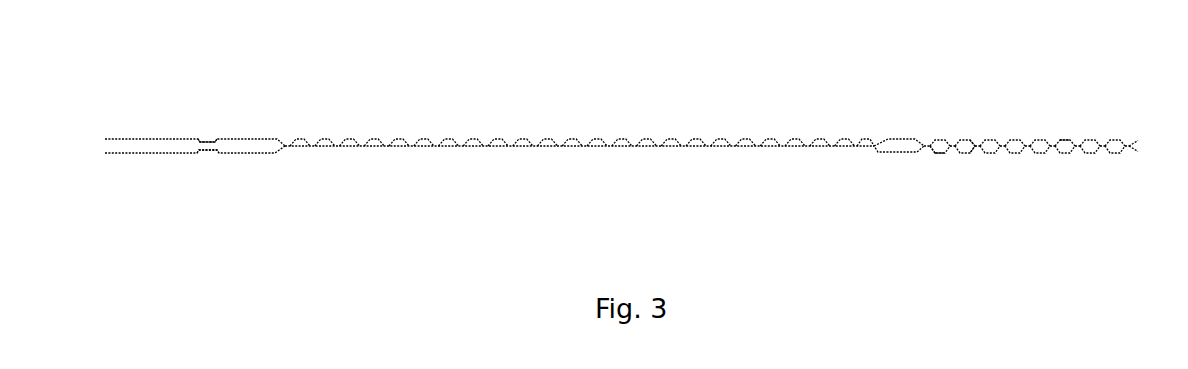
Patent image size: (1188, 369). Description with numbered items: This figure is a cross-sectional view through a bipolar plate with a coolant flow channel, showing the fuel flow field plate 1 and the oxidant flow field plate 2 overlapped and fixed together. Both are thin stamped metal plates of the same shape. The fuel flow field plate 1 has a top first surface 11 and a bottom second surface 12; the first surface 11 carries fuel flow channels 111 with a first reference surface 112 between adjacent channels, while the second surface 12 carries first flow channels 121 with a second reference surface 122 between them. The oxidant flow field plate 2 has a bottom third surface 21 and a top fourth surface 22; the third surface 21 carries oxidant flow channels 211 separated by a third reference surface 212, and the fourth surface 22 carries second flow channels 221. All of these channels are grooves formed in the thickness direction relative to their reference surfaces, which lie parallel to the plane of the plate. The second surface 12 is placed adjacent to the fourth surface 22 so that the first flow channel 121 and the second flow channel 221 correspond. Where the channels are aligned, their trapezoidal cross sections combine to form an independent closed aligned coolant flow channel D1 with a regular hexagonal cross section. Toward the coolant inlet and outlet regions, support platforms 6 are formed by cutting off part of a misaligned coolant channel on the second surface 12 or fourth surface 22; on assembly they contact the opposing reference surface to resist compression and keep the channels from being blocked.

The fuel flow field plate 1 is at (160, 153).
The oxidant flow field plate 2 is at (183, 138).
The first surface 11 is at (233, 152).
The second surface 12 is at (253, 143).
The support platform 6 is at (820, 140).
The third surface 21 is at (905, 140).
The fourth surface 22 is at (915, 142).
The first flow channel 121 is at (965, 146).
The second reference surface 122 is at (977, 145).
The fuel flow channel 111 is at (929, 152).
The first reference surface 112 is at (937, 152).
The aligned coolant flow channel D1 is at (1015, 150).
The oxidant flow channel 211 is at (1057, 141).
The third reference surface 212 is at (1068, 140).
The second flow channel 221 is at (1090, 142).